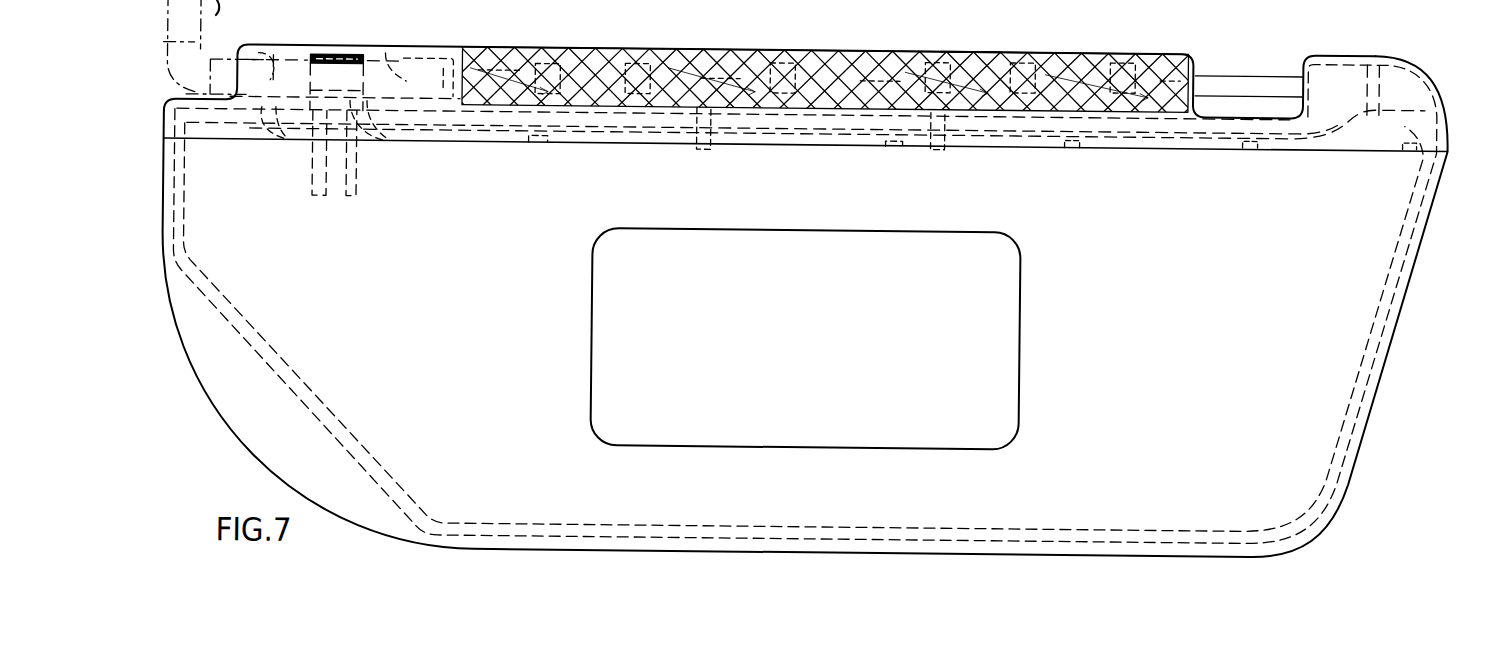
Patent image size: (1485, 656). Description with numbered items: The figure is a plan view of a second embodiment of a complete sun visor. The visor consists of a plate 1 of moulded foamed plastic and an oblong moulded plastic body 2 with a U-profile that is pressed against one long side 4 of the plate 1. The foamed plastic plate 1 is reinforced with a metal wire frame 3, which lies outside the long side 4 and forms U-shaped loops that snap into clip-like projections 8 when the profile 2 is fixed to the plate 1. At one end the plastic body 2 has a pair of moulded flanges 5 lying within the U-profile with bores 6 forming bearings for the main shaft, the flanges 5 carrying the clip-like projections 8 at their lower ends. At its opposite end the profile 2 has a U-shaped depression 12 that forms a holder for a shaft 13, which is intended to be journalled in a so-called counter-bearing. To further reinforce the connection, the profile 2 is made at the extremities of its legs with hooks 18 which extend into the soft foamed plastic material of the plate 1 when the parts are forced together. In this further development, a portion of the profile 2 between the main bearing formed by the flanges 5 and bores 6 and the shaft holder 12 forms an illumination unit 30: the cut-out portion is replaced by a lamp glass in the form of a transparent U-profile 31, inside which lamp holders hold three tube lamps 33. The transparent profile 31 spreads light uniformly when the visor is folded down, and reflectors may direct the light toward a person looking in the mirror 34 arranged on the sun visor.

The plate 1 is at (250, 429).
The plastic body 2 is at (433, 45).
The metal wire frame 3 is at (312, 390).
The long side 4 is at (765, 145).
The flanges 5 is at (272, 148).
The bores 6 is at (266, 52).
The clip-like projections 8 is at (948, 145).
The U-shaped depression 12 is at (1200, 67).
The shaft 13 is at (1255, 72).
The hooks 18 is at (1074, 142).
The illumination unit 30 is at (882, 41).
The transparent U-profile 31 is at (962, 45).
The tube lamps 33 is at (562, 47).
The mirror 34 is at (1022, 365).